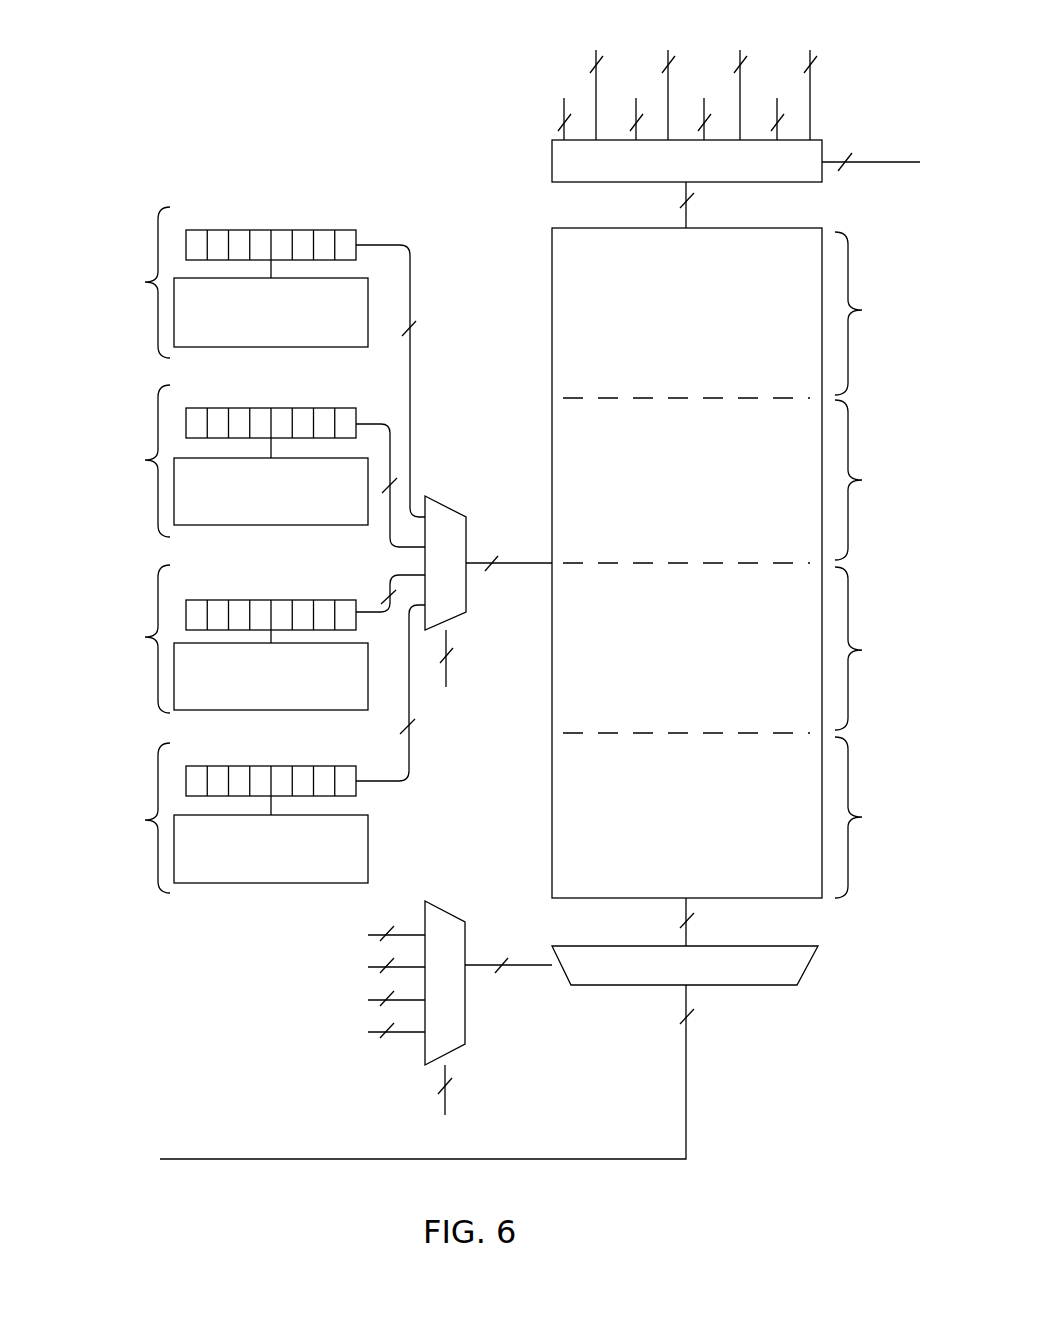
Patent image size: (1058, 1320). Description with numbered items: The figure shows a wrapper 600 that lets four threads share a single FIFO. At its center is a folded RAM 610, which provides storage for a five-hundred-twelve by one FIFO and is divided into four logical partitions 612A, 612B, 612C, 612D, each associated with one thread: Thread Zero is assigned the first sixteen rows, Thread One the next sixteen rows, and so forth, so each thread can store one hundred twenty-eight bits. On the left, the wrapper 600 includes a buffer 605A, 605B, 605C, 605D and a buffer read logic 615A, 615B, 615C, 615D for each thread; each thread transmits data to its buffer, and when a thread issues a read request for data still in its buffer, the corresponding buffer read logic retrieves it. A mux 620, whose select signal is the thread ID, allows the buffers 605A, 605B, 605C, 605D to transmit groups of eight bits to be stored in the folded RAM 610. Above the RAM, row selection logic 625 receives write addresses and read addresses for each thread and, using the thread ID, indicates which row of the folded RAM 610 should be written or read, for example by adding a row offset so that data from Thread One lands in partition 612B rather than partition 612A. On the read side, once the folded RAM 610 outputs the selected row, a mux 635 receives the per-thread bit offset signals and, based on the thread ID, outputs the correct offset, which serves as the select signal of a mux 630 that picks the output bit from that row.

The wrapper 600 is at (338, 66).
The buffer 605A is at (271, 230).
The buffer 605B is at (271, 408).
The buffer 605C is at (271, 600).
The buffer 605D is at (271, 766).
The buffer read logic 615A is at (358, 337).
The buffer read logic 615B is at (358, 517).
The buffer read logic 615C is at (358, 702).
The buffer read logic 615D is at (358, 874).
The mux 620 is at (455, 510).
The row selection logic 625 is at (808, 172).
The folded RAM 610 is at (798, 270).
The logical partition 612A is at (874, 313).
The logical partition 612B is at (874, 480).
The logical partition 612C is at (874, 648).
The logical partition 612D is at (875, 817).
The mux 630 is at (812, 968).
The mux 635 is at (447, 910).